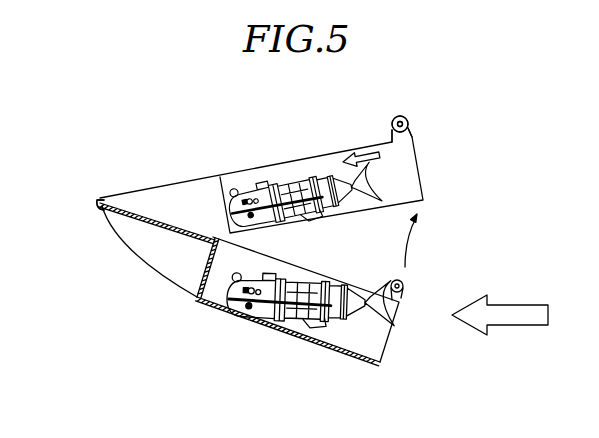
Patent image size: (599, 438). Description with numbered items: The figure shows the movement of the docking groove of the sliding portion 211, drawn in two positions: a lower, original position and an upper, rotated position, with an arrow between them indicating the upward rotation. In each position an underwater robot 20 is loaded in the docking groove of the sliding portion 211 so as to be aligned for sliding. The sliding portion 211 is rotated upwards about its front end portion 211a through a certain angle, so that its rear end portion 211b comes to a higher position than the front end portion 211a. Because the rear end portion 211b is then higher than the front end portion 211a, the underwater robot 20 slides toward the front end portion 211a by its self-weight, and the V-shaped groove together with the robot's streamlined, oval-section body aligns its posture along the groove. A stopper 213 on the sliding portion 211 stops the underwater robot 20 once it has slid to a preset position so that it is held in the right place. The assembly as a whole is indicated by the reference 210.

The underwater robot 20 is at (316, 279).
The launching cradle 210 is at (265, 349).
The sliding portion 211 is at (337, 358).
The front end portion 211a is at (97, 203).
The rear end portion 211b is at (409, 125).
The stopper 213 is at (198, 292).